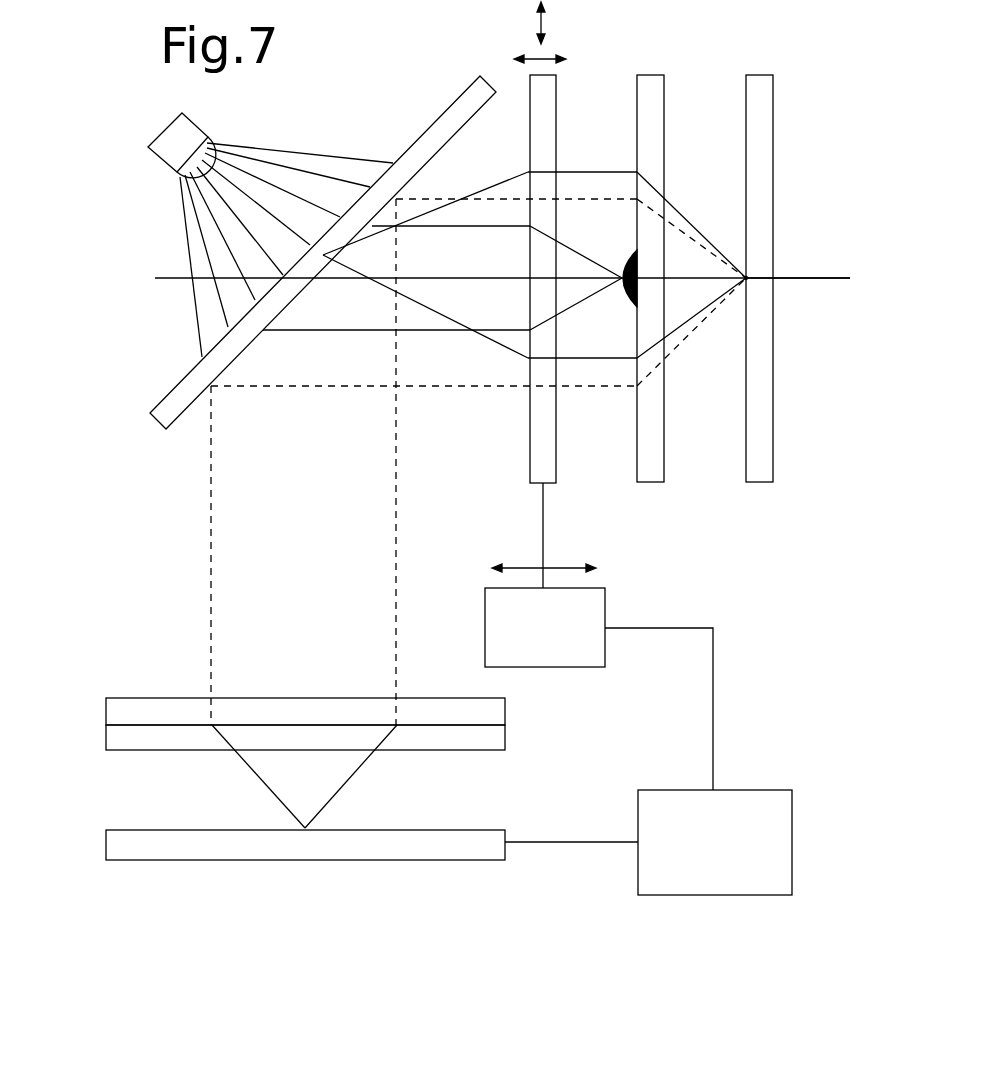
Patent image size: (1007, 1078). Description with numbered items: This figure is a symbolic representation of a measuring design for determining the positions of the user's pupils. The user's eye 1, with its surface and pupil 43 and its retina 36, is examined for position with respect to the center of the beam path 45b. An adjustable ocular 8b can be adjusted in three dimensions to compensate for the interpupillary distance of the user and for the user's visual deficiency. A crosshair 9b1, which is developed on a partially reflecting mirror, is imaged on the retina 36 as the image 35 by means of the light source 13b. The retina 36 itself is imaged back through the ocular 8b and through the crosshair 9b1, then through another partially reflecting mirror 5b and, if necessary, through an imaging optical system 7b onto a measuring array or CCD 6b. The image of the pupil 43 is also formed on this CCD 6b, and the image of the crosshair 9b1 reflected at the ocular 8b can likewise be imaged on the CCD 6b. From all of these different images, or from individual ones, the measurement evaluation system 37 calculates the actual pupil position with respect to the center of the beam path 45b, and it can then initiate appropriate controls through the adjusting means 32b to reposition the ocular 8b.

The user's eye 1 is at (782, 522).
The partially reflecting mirror 5b is at (160, 712).
The measuring array or CCD 6b is at (160, 847).
The imaging optical system 7b is at (158, 740).
The adjustable ocular 8b is at (545, 465).
The crosshair 9b1 is at (273, 299).
The light source 13b is at (175, 142).
The adjusting means 32b is at (545, 575).
The image of the crosshair 35 is at (806, 399).
The retina 36 is at (758, 155).
The measurement evaluation system 37 is at (698, 761).
The pupil 43 is at (672, 98).
The center of the beam path 45b is at (798, 275).